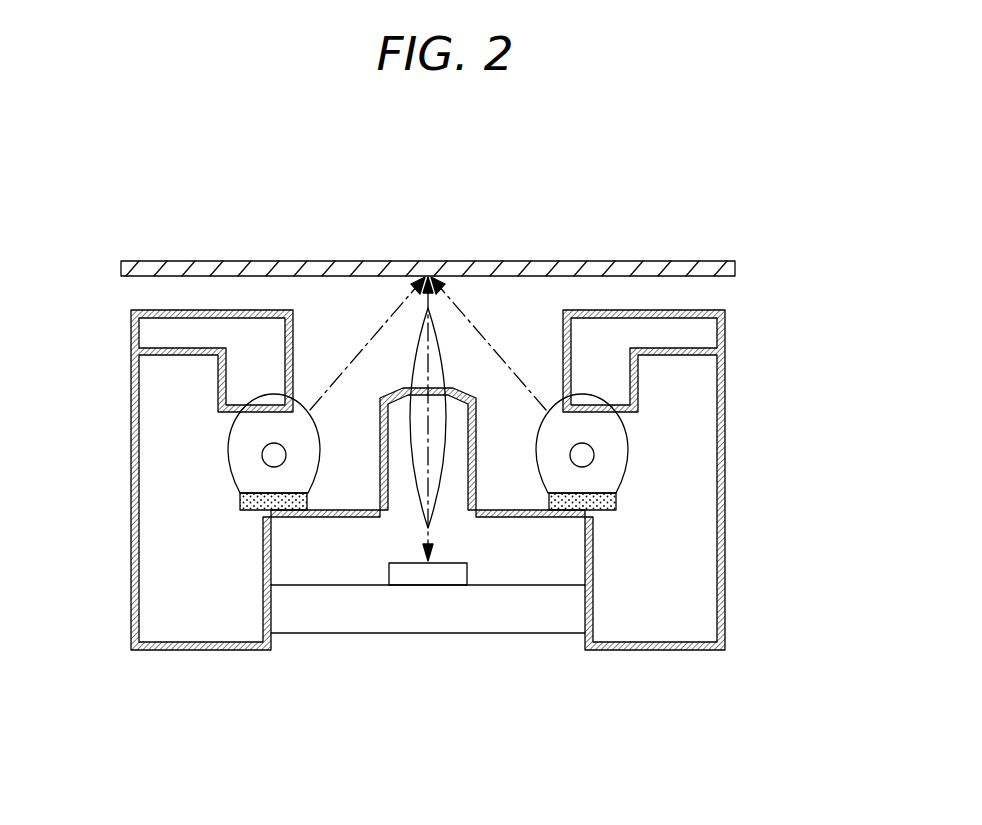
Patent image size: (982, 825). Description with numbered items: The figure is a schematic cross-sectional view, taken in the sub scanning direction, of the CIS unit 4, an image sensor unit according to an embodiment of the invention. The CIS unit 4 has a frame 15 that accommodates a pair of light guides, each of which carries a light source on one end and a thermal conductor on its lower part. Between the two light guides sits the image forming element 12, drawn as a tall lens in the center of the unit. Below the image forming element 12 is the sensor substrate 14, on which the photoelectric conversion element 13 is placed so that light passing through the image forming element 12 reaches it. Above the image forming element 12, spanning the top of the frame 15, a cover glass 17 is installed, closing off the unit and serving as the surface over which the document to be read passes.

The CIS unit 4 is at (440, 225).
The image forming element 12 is at (433, 505).
The photoelectric conversion element 13 is at (402, 577).
The sensor substrate 14 is at (516, 622).
The frame 15 is at (725, 538).
The cover glass 17 is at (720, 261).